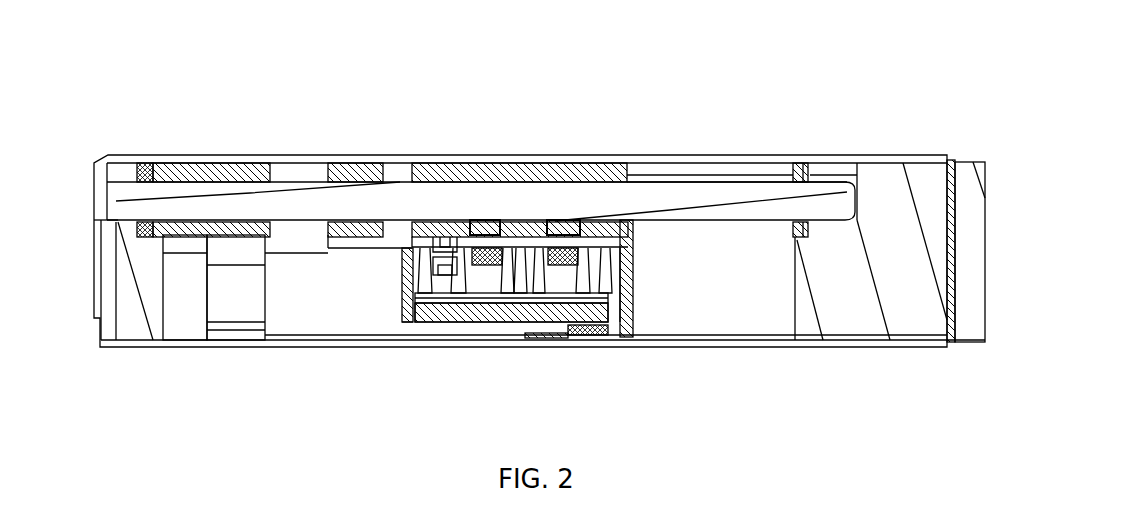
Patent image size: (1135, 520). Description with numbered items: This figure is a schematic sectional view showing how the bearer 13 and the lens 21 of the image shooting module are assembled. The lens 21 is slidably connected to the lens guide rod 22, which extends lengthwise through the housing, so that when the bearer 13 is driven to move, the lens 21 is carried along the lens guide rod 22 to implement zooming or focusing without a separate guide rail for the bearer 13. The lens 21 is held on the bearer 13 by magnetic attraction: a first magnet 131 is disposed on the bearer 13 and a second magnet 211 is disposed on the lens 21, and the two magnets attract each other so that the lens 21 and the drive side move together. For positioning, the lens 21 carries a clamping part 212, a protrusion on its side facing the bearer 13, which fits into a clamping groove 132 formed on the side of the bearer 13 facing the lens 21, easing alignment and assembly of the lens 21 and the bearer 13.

The lens 21 is at (507, 157).
The lens guide rod 22 is at (595, 188).
The second magnet 211 is at (557, 220).
The clamping part 212 is at (440, 236).
The bearer 13 is at (517, 265).
The first magnet 131 is at (570, 305).
The clamping groove 132 is at (446, 270).